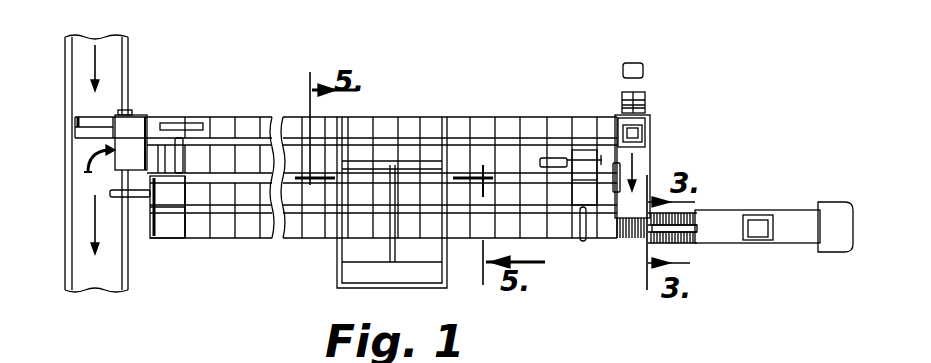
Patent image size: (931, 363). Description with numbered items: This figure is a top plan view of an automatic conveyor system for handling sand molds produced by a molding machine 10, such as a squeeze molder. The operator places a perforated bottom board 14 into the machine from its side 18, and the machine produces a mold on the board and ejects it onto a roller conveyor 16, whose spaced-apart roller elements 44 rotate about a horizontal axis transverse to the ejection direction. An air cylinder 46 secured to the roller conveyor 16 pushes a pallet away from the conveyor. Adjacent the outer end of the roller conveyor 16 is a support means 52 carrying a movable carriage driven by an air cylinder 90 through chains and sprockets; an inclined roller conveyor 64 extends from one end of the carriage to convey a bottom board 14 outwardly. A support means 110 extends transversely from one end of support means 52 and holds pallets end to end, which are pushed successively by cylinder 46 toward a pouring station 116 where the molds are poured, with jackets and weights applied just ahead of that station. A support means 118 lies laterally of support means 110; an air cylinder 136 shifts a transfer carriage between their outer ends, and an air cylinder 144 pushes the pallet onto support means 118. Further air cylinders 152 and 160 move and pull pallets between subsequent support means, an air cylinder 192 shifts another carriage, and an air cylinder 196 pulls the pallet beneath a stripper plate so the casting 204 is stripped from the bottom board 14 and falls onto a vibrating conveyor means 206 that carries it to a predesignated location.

The molding machine 10 is at (808, 198).
The perforated bottom board 14 is at (645, 70).
The roller conveyor 16 is at (697, 198).
The side of the molding machine 18 is at (743, 212).
The roller elements 44 is at (683, 240).
The air cylinder 46 is at (697, 232).
The support means 52 is at (662, 160).
The inclined roller conveyor 64 is at (647, 103).
The air cylinder 90 is at (613, 170).
The support means 110 is at (468, 242).
The pouring station 116 is at (328, 265).
The support means 118 is at (505, 188).
The air cylinder 136 is at (185, 143).
The air cylinder 144 is at (110, 193).
The air cylinder 152 is at (580, 243).
The air cylinder 160 is at (553, 158).
The air cylinder 192 is at (158, 212).
The air cylinder 196 is at (195, 122).
The casting 204 is at (86, 150).
The conveyor means 206 is at (128, 62).